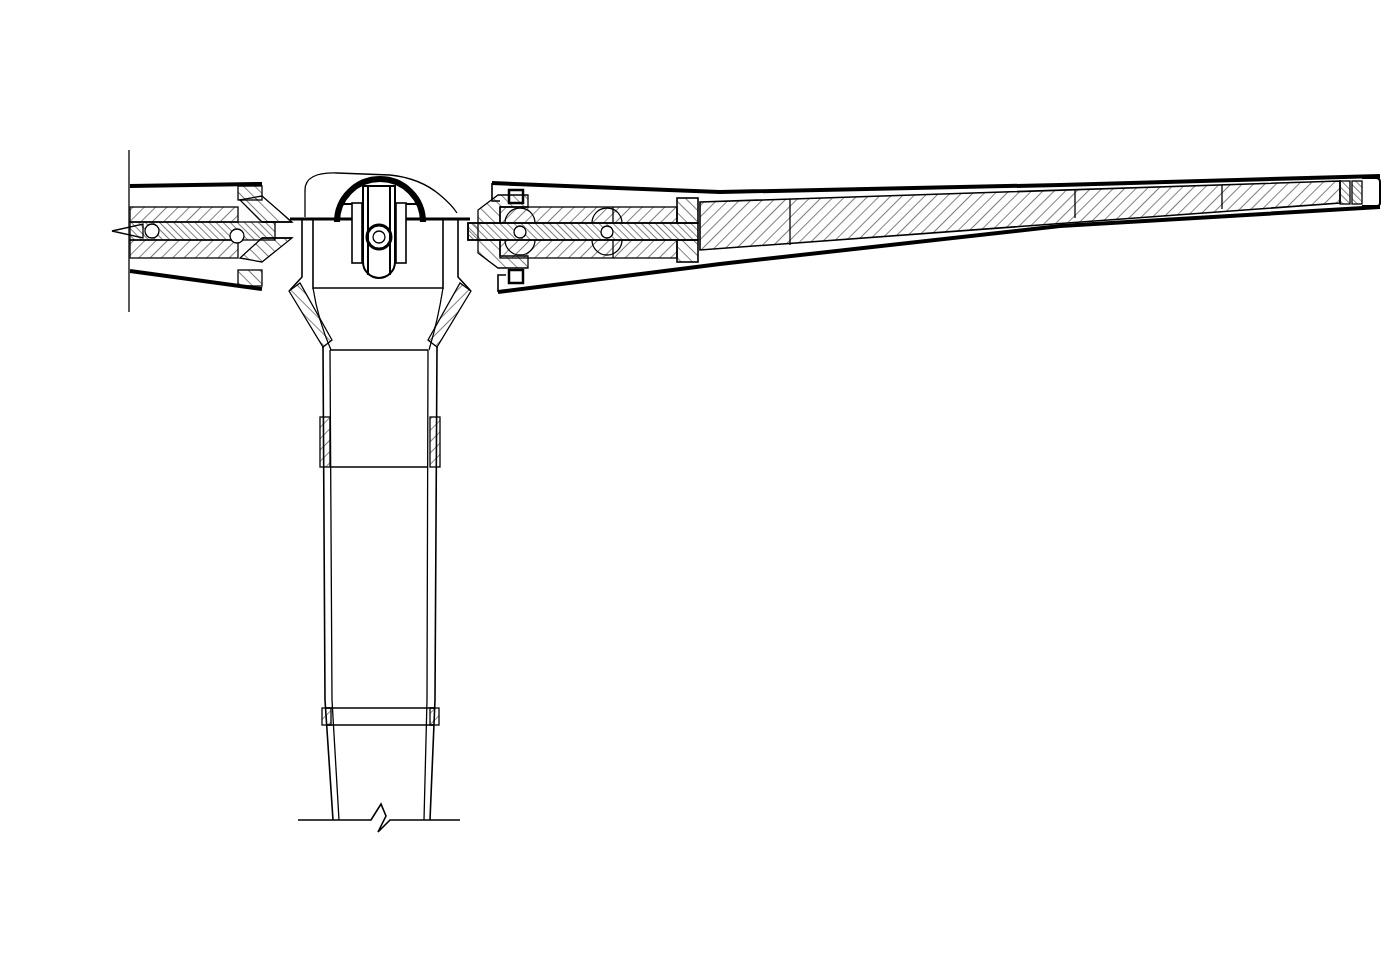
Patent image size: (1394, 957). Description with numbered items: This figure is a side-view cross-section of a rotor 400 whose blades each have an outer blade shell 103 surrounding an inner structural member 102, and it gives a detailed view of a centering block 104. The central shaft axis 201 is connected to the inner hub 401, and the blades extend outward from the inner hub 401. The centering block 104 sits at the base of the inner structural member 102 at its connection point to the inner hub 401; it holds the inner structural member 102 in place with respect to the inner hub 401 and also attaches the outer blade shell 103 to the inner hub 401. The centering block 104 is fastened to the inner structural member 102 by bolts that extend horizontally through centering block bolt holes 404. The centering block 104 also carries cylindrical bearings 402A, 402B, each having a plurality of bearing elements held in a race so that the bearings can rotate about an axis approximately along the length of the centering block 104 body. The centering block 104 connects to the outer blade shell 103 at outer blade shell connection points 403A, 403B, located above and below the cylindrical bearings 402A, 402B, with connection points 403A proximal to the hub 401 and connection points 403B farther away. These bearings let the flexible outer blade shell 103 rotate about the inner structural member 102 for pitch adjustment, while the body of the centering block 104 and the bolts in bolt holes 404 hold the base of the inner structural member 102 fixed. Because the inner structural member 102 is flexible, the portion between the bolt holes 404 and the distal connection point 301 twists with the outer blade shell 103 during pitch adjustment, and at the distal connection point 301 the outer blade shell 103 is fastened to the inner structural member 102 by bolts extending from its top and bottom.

The rotor assembly 400 is at (194, 82).
The inner hub 401 is at (336, 245).
The cylindrical bearing 402A is at (472, 203).
The cylindrical bearing 402B is at (665, 198).
The outer blade shell connection points 403A is at (517, 188).
The outer blade shell connection points 403B is at (688, 196).
The centering block bolt holes 404 is at (612, 248).
The centering block 104 is at (648, 252).
The outer blade shell 103 is at (850, 195).
The inner structural member 102 is at (965, 226).
The distal connection point 301 is at (1345, 215).
The central shaft axis 201 is at (402, 583).